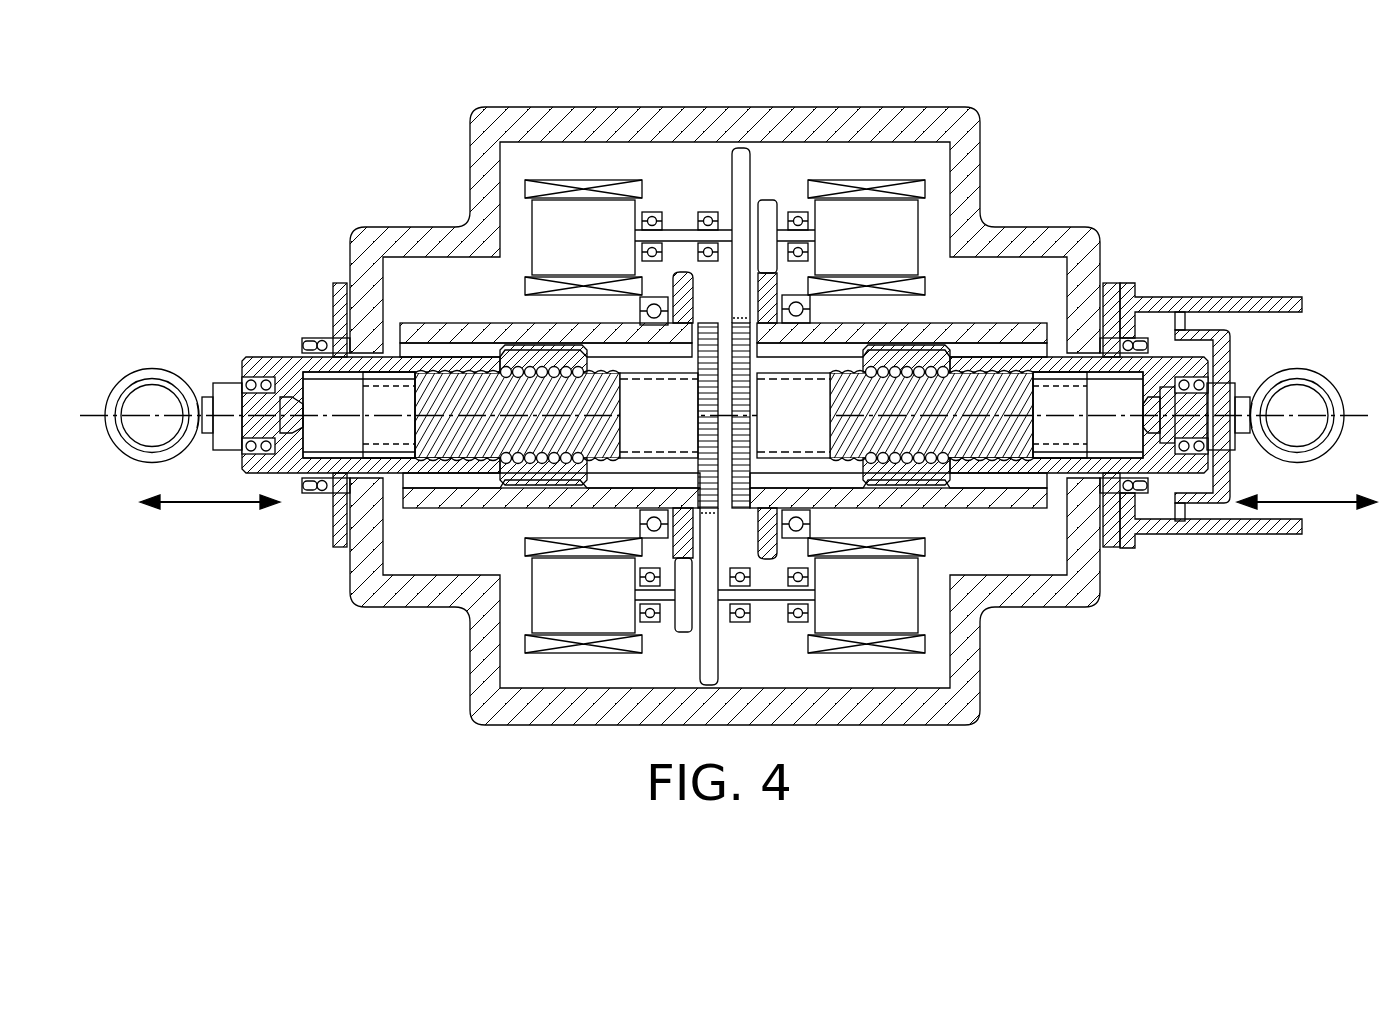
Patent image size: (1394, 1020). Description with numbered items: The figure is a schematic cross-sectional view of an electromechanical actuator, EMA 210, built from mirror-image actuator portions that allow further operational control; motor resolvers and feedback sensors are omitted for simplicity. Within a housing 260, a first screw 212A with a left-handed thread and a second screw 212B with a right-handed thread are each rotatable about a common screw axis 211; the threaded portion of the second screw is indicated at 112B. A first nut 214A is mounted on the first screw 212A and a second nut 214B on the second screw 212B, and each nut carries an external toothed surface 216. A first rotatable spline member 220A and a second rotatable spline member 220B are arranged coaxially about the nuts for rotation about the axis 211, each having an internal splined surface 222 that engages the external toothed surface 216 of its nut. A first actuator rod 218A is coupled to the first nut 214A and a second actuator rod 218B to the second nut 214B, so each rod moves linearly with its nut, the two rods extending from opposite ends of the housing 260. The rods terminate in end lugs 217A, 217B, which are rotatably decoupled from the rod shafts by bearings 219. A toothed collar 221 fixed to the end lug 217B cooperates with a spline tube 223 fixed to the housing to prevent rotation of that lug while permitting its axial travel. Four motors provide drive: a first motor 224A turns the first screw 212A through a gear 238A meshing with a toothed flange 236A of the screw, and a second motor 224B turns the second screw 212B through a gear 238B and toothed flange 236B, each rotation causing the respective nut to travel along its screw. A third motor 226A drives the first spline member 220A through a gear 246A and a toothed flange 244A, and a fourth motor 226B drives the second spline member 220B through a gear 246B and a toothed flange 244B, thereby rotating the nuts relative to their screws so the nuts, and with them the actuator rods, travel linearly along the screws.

The EMA 210 is at (1126, 184).
The housing 260 is at (512, 107).
The screw axis 211 is at (318, 405).
The first screw 212A is at (556, 416).
The second screw 212B is at (895, 416).
The screw thread 112B is at (866, 396).
The first nut 214A is at (563, 366).
The second nut 214B is at (892, 368).
The external toothed surface 216 is at (560, 356).
The end lug 217A is at (125, 382).
The end lug 217B is at (1328, 370).
The first actuator rod 218A is at (240, 373).
The second actuator rod 218B is at (1230, 368).
The bearings 219 is at (244, 452).
The first rotatable spline member 220A is at (503, 510).
The second rotatable spline member 220B is at (950, 510).
The toothed collar 221 is at (1205, 325).
The splined surface 222 is at (470, 350).
The spline tube 223 is at (1243, 298).
The first motor 224A is at (866, 595).
The second motor 224B is at (583, 237).
The third motor 226A is at (583, 595).
The fourth motor 226B is at (866, 237).
The toothed flange 236A is at (698, 482).
The toothed flange 236B is at (752, 482).
The gear 238A is at (714, 652).
The gear 238B is at (736, 169).
The toothed flange 244A is at (648, 530).
The toothed flange 244B is at (802, 530).
The gear 246A is at (684, 600).
The gear 246B is at (770, 198).